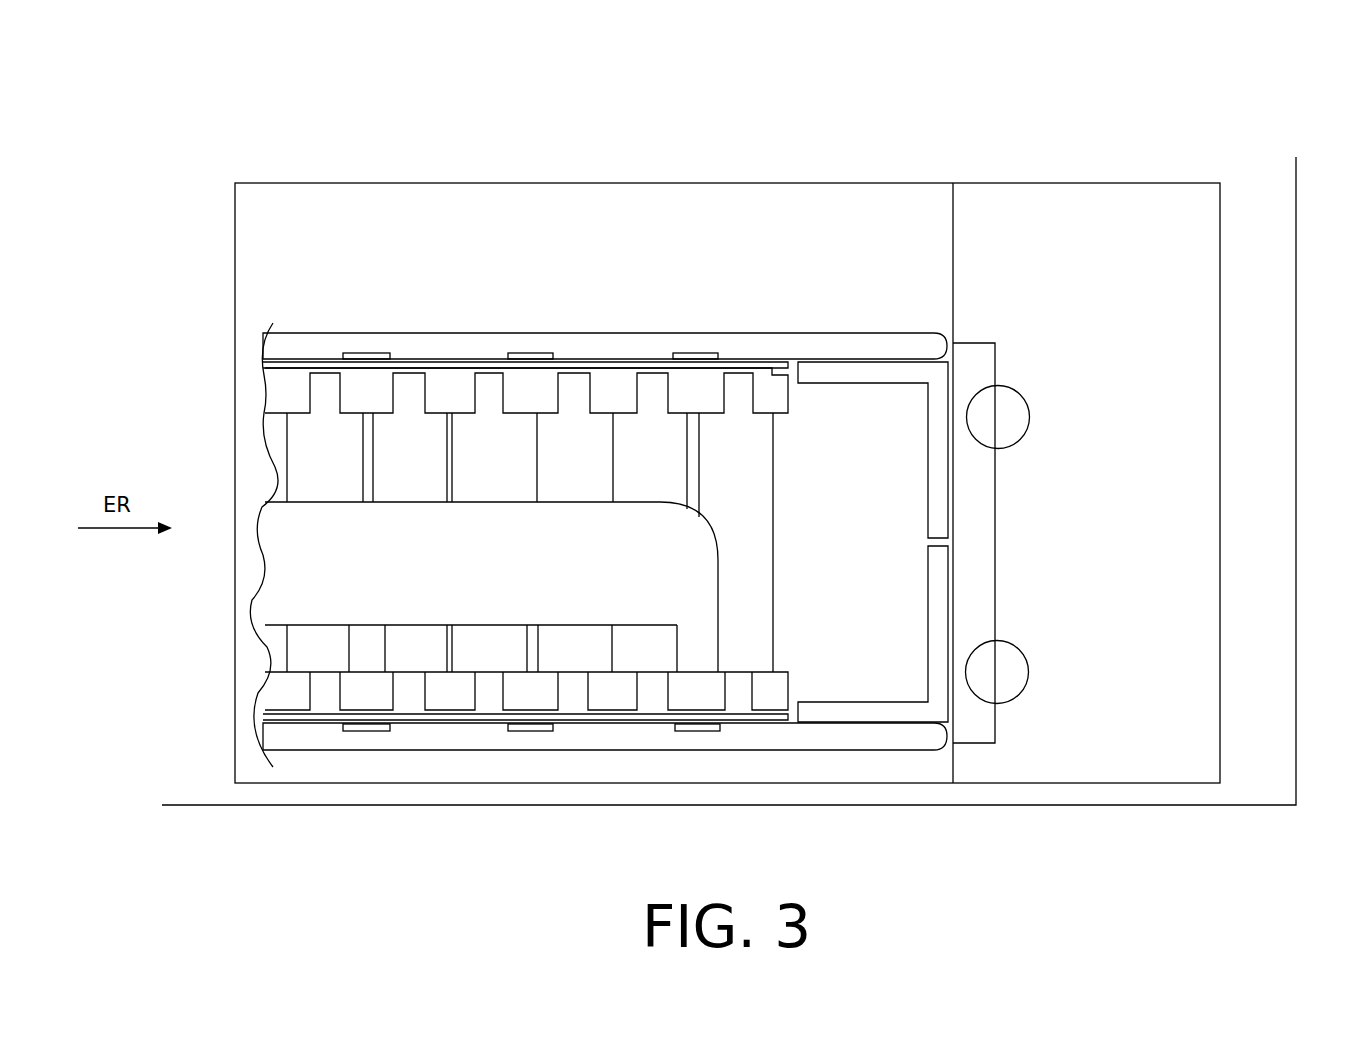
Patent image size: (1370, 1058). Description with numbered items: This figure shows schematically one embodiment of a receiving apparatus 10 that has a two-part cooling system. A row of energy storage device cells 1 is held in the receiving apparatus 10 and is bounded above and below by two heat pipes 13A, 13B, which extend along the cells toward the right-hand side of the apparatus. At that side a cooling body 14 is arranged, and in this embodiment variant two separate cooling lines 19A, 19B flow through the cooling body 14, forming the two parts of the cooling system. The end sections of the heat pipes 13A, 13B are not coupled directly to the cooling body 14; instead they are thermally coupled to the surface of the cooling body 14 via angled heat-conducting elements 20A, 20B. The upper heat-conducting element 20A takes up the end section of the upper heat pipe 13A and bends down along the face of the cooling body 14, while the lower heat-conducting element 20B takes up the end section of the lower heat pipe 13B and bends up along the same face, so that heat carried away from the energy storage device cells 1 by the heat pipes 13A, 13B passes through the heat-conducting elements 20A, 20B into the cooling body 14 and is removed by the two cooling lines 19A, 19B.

The energy storage device cell 1 is at (519, 542).
The receiving apparatus 10 is at (1240, 134).
The heat pipe 13A is at (788, 343).
The heat pipe 13B is at (875, 738).
The cooling body 14 is at (985, 583).
The cooling line 19A is at (1015, 413).
The cooling line 19B is at (1005, 673).
The heat conducting element 20A is at (907, 373).
The heat conducting element 20B is at (848, 710).